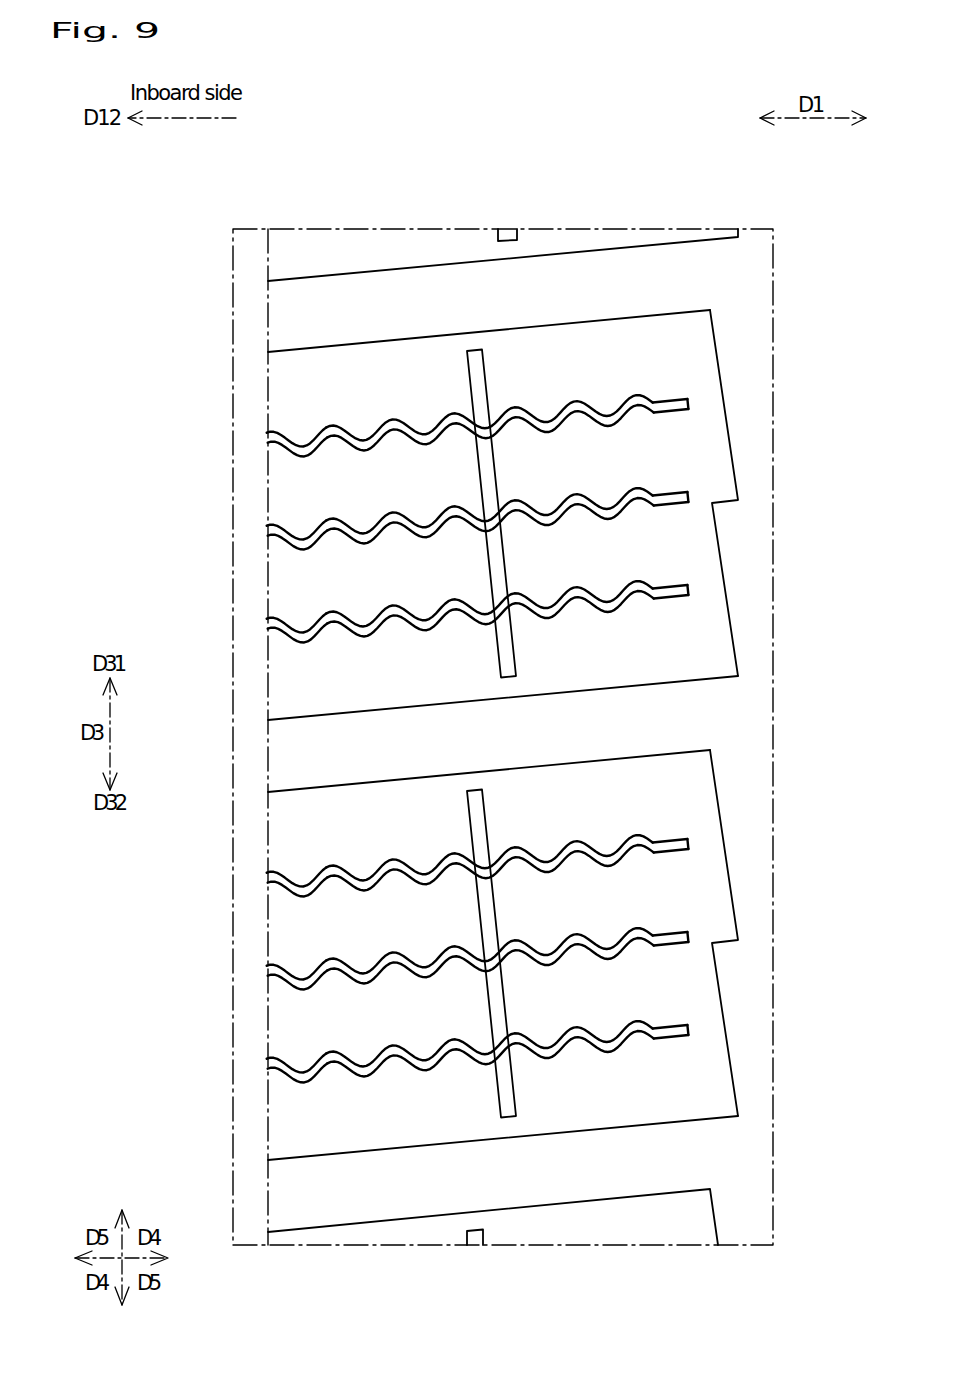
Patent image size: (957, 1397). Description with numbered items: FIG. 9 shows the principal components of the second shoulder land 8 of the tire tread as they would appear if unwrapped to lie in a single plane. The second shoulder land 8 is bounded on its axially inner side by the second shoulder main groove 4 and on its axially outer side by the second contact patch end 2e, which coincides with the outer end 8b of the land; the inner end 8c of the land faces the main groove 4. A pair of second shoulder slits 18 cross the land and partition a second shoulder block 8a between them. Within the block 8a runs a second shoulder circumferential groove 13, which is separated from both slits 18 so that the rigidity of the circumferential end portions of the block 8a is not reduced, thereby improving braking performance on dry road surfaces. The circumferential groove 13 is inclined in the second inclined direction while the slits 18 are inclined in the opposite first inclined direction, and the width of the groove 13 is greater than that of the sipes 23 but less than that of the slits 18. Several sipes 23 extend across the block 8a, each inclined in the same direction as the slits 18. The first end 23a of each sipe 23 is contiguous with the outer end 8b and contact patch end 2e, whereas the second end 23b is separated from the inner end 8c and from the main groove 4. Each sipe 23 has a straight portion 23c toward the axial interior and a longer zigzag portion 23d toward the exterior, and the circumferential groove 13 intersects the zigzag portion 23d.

The second shoulder main groove 4 is at (758, 257).
The second shoulder land 8 is at (446, 690).
The second shoulder block 8a is at (287, 702).
The outer end in the tire axial direction of second shoulder land 8b is at (268, 247).
The inner end in the tire axial direction of second shoulder land 8c is at (714, 332).
The second contact patch end 2e is at (268, 296).
The second shoulder circumferential groove 13 is at (487, 383).
The second shoulder slit 18 is at (285, 333).
The sipe 23 is at (484, 684).
The first end of sipe 23a is at (268, 436).
The second end of sipe 23b is at (752, 386).
The straight portion of sipe 23c is at (673, 401).
The zigzag portion of sipe 23d is at (396, 421).